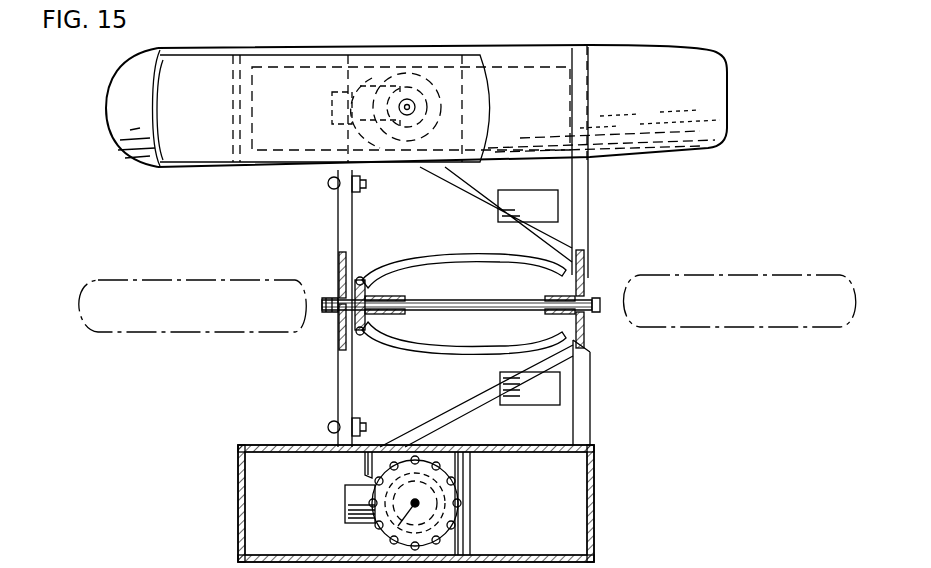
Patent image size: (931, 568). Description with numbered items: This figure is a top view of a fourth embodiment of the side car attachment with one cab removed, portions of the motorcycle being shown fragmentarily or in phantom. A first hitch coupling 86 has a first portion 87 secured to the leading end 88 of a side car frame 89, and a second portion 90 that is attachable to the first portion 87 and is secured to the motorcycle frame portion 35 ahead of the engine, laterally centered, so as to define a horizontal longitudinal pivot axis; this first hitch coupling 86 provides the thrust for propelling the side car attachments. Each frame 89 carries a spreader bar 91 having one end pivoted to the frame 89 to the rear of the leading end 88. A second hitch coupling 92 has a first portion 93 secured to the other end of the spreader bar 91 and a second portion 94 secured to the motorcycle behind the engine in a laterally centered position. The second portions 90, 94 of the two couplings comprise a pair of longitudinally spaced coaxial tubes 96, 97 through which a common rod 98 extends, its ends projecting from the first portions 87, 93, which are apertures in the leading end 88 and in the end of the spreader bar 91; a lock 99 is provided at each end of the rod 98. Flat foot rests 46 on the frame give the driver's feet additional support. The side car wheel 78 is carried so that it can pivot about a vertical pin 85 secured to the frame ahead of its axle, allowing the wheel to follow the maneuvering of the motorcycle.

The motorcycle frame portion 35 is at (525, 342).
The flat foot rest 46 is at (500, 206).
The wheel 78 is at (332, 105).
The vertical pin 85 is at (405, 102).
The first hitch coupling 86 is at (407, 95).
The first portion of first hitch coupling 87 is at (584, 272).
The leading end of frame 88 is at (588, 228).
The side car frame 89 is at (300, 160).
The second portion of first hitch coupling 90 is at (520, 300).
The spreader bar 91 is at (347, 235).
The second hitch coupling 92 is at (332, 322).
The first portion of second hitch coupling 93 is at (340, 288).
The second portion of second hitch coupling 94 is at (405, 298).
The coaxial tube 96 is at (565, 292).
The coaxial tube 97 is at (378, 288).
The common rod 98 is at (450, 316).
The lock 99 is at (322, 302).